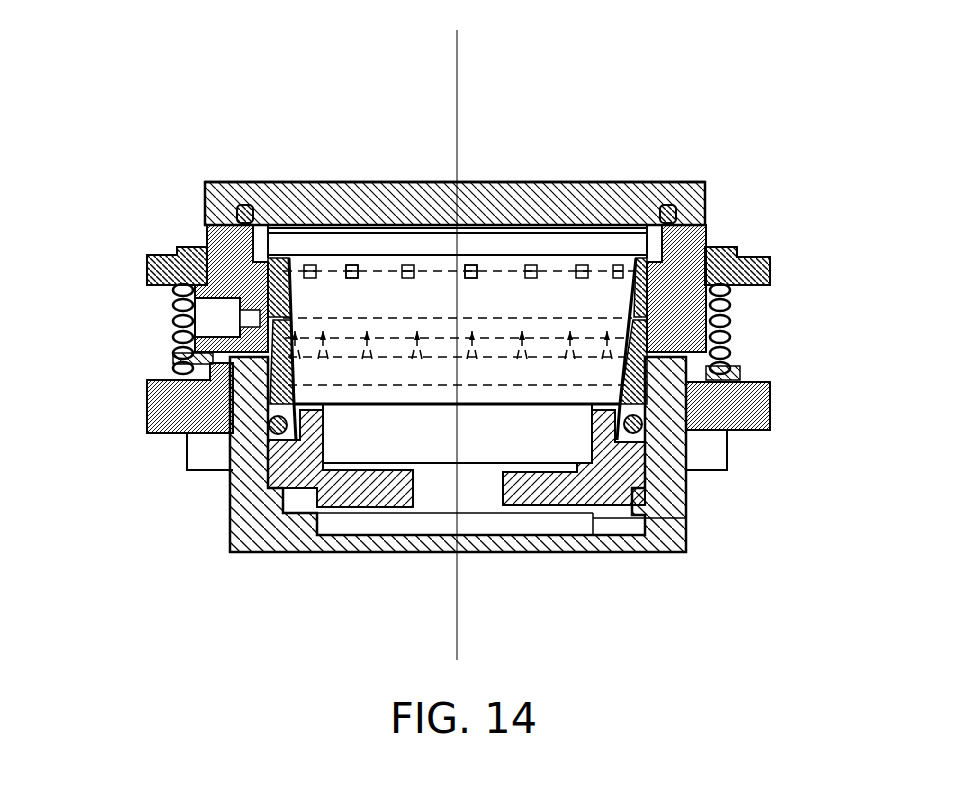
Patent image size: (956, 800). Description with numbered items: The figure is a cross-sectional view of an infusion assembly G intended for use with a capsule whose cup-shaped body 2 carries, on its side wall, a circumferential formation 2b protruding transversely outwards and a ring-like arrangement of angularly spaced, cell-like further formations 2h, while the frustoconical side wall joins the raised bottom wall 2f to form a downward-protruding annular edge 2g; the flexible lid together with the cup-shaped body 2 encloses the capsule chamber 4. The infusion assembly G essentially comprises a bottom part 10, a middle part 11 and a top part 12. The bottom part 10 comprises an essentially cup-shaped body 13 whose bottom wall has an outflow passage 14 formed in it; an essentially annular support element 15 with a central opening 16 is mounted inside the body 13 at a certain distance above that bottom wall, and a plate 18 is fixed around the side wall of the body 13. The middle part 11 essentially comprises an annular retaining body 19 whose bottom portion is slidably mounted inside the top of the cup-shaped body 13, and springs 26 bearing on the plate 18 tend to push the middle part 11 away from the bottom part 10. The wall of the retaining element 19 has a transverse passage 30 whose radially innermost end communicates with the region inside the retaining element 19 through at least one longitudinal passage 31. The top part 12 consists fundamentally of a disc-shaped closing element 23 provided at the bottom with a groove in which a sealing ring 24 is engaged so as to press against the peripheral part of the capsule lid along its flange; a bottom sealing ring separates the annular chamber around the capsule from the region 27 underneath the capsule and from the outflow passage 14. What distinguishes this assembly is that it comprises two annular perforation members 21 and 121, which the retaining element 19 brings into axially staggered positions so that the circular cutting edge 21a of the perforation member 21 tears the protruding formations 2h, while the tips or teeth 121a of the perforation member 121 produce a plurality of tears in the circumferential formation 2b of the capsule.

The infusion assembly G is at (270, 160).
The cup-shaped body 2 is at (740, 338).
The circumferential formation 2b is at (338, 335).
The raised bottom wall 2f is at (510, 400).
The annular edge 2g is at (315, 418).
The further formations 2h is at (352, 278).
The chamber 4 is at (449, 306).
The bottom part 10 is at (712, 500).
The middle part 11 is at (140, 344).
The top part 12 is at (725, 208).
The body 13 is at (265, 530).
The outflow passage 14 is at (660, 521).
The support element 15 is at (388, 490).
The central opening 16 is at (500, 483).
The plate 18 is at (733, 434).
The annular retaining body 19 is at (738, 312).
The annular perforation member 21 is at (710, 238).
The circular cutting edge 21a is at (313, 256).
The closing element 23 is at (558, 185).
The sealing ring 24 is at (668, 206).
The springs 26 is at (740, 365).
The region 27 is at (497, 451).
The transverse passage 30 is at (170, 318).
The longitudinal passage 31 is at (200, 238).
The annular perforation member 121 is at (770, 428).
The tips or teeth 121a is at (417, 335).